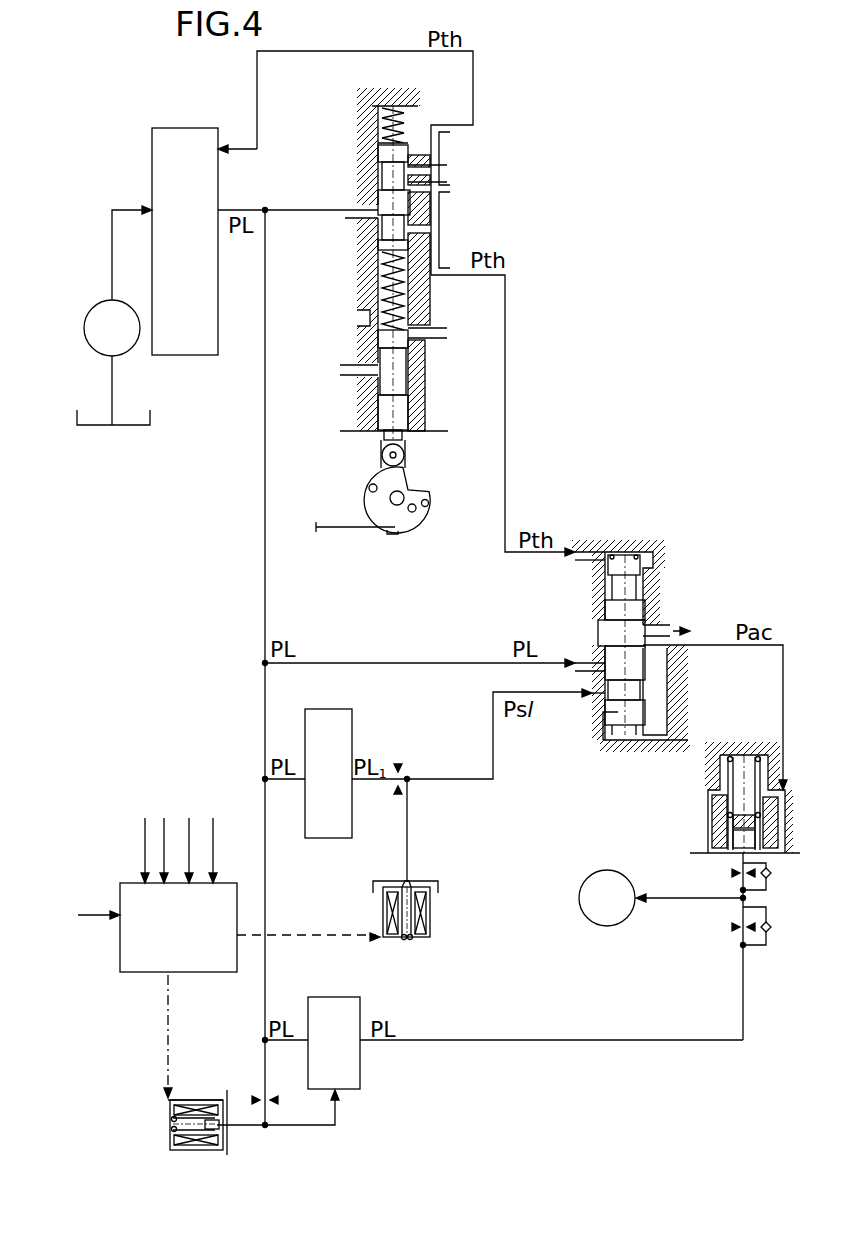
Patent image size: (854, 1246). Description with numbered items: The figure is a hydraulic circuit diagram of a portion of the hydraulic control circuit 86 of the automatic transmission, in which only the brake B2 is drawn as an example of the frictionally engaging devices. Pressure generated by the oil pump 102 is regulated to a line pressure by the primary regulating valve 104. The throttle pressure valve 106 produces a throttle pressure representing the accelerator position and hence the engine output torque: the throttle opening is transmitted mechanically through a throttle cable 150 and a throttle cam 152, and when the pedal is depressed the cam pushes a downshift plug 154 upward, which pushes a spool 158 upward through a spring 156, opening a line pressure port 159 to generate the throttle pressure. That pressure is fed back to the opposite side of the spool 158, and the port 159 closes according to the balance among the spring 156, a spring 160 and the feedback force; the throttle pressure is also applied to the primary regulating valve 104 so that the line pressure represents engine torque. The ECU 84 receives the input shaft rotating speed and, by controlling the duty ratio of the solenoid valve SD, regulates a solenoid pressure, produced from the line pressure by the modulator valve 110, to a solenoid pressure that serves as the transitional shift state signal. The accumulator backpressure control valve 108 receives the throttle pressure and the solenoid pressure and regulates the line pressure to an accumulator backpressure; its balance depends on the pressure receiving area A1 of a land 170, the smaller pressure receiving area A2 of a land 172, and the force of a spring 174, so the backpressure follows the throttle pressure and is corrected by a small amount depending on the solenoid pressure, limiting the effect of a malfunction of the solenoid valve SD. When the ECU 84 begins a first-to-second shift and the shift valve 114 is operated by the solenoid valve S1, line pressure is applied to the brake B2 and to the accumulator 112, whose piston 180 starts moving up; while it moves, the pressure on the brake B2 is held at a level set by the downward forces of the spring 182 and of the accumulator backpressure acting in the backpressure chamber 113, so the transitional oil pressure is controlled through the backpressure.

The hydraulic control circuit 86 is at (578, 82).
The oil pump 102 is at (88, 313).
The primary regulating valve 104 is at (172, 134).
The throttle pressure valve 106 is at (419, 278).
The accumulator backpressure control valve 108 is at (622, 600).
The modulator valve 110 is at (332, 717).
The accumulator 112 is at (690, 781).
The backpressure chamber 113 is at (782, 830).
The shift valve 114 is at (362, 1080).
The throttle cable 150 is at (342, 533).
The throttle cam 152 is at (400, 530).
The downshift plug 154 is at (373, 408).
The spring 156 is at (365, 320).
The spool 158 is at (385, 223).
The line pressure port 159 is at (352, 207).
The spring 160 is at (382, 112).
The land 170 is at (590, 652).
The land 172 is at (603, 707).
The spring 174 is at (658, 565).
The piston 180 is at (715, 817).
The spring 182 is at (742, 772).
The ECU 84 is at (183, 972).
The pressure receiving area A1 is at (645, 666).
The pressure receiving area A2 is at (643, 725).
The brake B2 is at (612, 920).
The solenoid valve SD is at (418, 940).
The solenoid valve S1 is at (165, 1135).